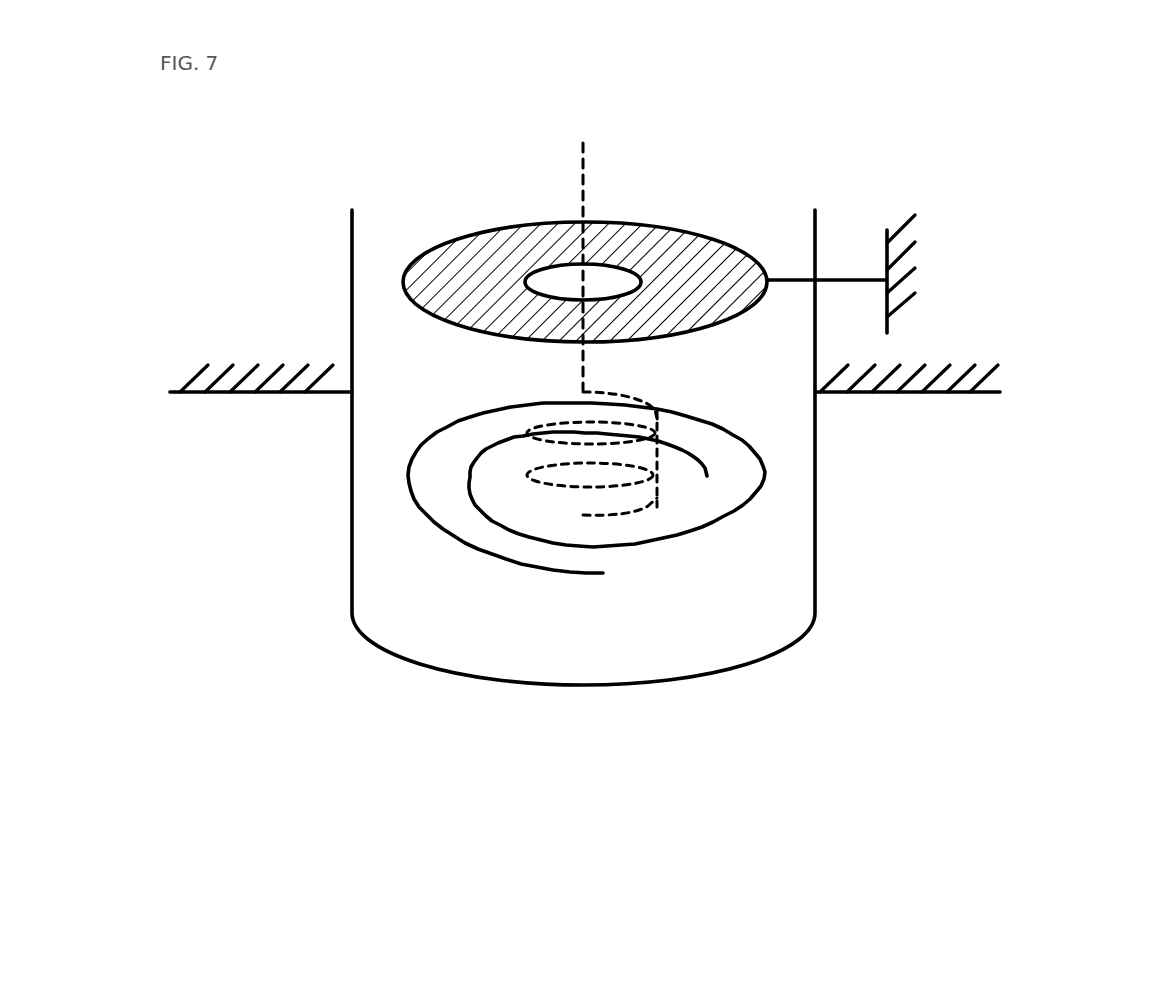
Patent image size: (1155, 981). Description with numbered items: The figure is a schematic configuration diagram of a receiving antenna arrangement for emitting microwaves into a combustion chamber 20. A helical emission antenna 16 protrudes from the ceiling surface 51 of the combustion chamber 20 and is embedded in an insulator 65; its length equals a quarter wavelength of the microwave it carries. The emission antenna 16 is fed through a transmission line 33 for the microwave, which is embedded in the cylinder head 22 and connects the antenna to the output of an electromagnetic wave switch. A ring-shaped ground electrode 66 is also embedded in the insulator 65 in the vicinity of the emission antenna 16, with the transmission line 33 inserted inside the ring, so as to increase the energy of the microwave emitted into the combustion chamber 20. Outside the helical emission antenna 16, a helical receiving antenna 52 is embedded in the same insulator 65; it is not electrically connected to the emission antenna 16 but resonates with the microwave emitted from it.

The emission antenna 16 is at (650, 513).
The combustion chamber 20 is at (602, 421).
The cylinder head 22 is at (983, 310).
The transmission line 33 is at (585, 195).
The ceiling surface 51 is at (912, 395).
The receiving antenna 52 is at (765, 477).
The insulator 65 is at (388, 575).
The ground electrode 66 is at (665, 262).